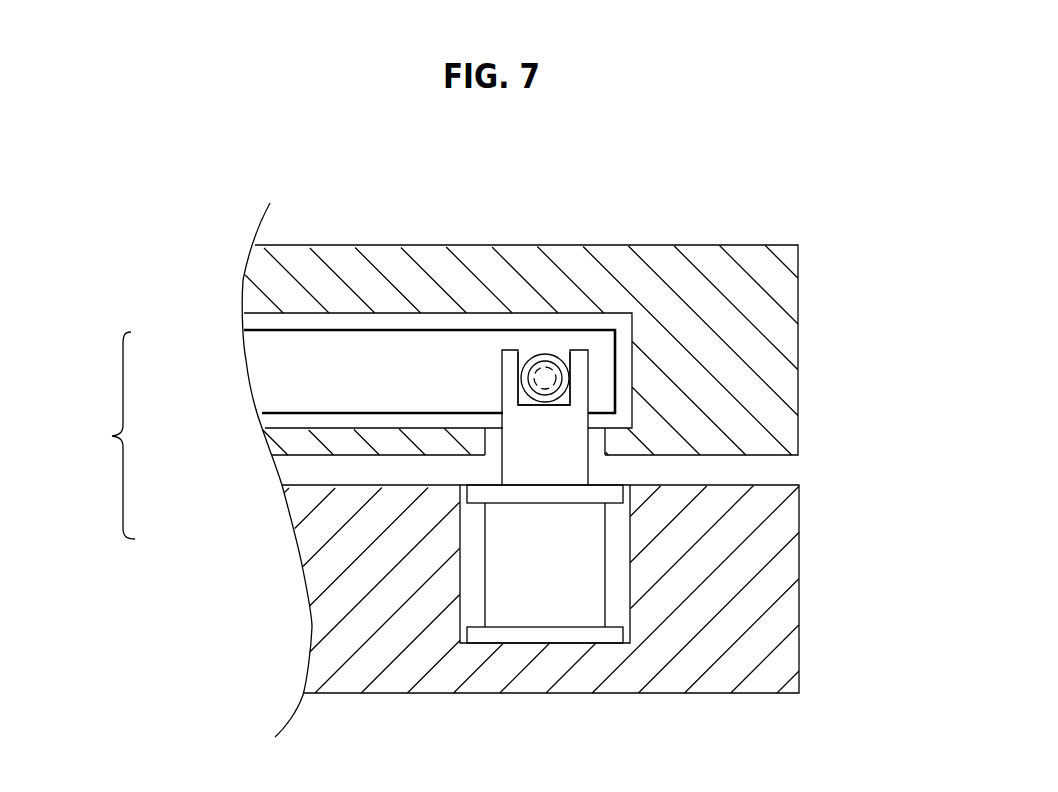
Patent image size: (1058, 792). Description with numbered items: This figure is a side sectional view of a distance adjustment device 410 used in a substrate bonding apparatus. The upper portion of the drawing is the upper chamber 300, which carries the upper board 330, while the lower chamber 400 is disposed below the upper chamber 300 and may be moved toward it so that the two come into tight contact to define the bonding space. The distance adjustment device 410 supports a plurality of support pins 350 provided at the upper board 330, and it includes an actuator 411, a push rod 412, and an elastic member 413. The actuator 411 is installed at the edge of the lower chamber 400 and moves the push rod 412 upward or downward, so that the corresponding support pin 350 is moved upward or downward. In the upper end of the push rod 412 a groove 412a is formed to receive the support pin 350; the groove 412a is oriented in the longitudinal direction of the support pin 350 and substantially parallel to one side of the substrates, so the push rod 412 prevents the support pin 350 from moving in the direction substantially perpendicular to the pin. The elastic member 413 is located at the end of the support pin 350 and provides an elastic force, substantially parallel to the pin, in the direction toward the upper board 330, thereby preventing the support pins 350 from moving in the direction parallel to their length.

The upper chamber 300 is at (812, 225).
The upper board 330 is at (412, 328).
The support pin 350 is at (552, 352).
The lower chamber 400 is at (800, 602).
The distance adjustment device 410 is at (92, 435).
The actuator 411 is at (513, 541).
The push rod 412 is at (507, 403).
The groove 412a is at (557, 357).
The elastic member 413 is at (513, 350).